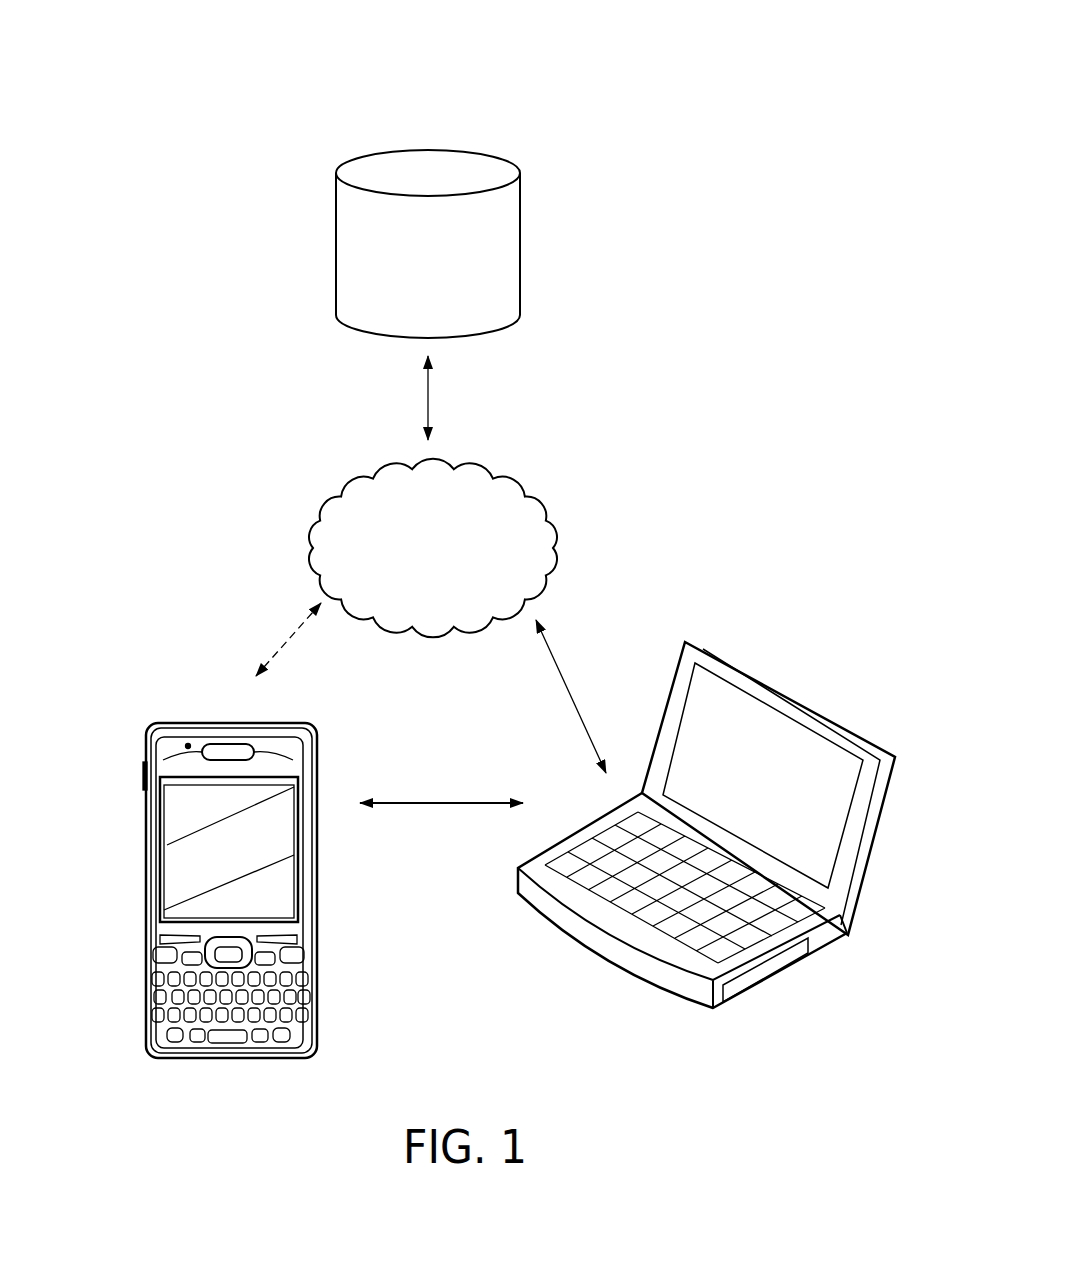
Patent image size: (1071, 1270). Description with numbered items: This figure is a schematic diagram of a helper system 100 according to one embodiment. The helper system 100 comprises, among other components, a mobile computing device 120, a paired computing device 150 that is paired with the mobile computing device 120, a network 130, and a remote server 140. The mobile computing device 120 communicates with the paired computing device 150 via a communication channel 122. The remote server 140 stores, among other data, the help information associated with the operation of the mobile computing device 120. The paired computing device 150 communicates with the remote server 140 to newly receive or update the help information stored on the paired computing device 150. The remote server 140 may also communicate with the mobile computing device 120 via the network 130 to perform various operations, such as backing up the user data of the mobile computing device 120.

The helper system 100 is at (536, 100).
The mobile computing device 120 is at (185, 795).
The communication channel 122 is at (440, 804).
The network 130 is at (453, 558).
The remote server 140 is at (448, 264).
The paired computing device 150 is at (643, 943).